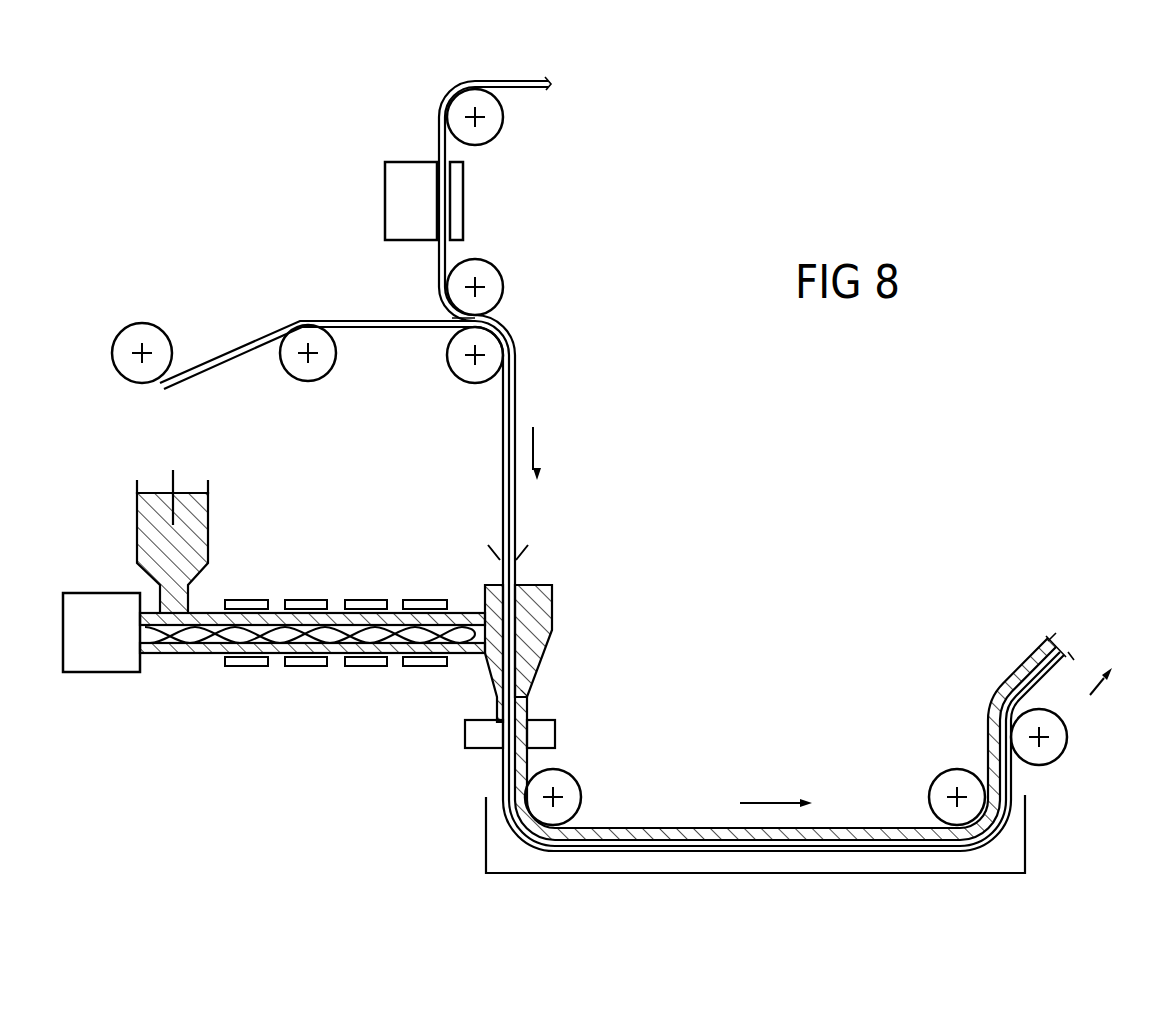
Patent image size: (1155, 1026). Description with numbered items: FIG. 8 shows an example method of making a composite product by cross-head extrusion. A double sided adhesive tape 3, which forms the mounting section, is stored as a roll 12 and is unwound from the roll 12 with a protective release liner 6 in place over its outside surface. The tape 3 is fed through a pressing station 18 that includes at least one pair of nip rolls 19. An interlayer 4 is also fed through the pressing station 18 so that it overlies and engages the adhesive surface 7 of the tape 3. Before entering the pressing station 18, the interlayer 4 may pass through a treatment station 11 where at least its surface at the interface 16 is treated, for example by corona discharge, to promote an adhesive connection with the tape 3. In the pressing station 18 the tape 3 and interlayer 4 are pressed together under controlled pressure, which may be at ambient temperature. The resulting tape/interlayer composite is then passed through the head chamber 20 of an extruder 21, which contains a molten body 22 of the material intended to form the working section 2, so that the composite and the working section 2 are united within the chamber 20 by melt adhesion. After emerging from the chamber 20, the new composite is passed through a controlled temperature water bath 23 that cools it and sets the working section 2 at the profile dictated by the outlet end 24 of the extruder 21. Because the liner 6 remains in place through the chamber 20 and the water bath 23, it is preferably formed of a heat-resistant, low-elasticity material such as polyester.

The working section 2 is at (1030, 680).
The double sided adhesive tape 3 is at (225, 340).
The interlayer 4 is at (520, 82).
The protective release liner 6 is at (253, 350).
The adhesive surface 7 is at (370, 318).
The treatment station 11 is at (405, 178).
The roll 12 is at (132, 370).
The interface 16 is at (450, 318).
The pressing station 18 is at (520, 314).
The nip rolls 19 is at (490, 270).
The head chamber 20 is at (553, 630).
The extruder 21 is at (263, 578).
The molten body 22 is at (545, 598).
The water bath 23 is at (655, 860).
The outlet end 24 is at (498, 748).